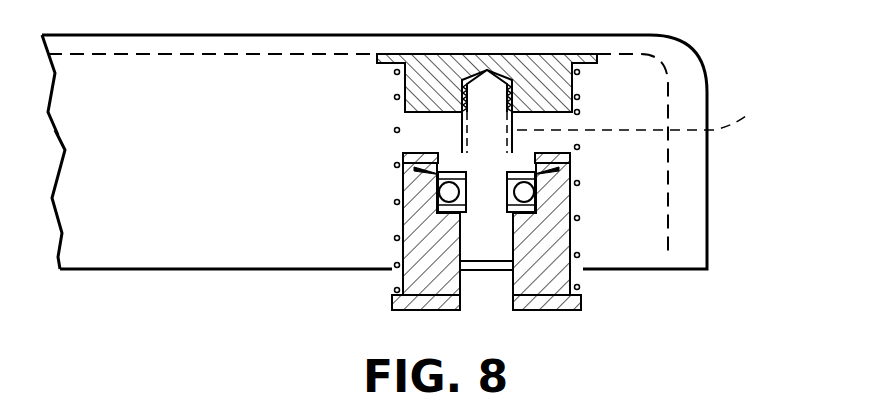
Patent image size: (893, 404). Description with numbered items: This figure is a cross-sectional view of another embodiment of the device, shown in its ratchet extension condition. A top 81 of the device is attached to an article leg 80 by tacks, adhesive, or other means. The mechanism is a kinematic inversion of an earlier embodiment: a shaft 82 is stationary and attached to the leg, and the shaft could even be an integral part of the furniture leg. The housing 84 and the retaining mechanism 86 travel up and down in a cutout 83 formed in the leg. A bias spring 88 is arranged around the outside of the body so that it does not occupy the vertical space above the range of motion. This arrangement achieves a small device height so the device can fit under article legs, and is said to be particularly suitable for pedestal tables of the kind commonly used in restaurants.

The article leg 80 is at (703, 68).
The top 81 is at (432, 48).
The shaft 82 is at (501, 249).
The cutout 83 is at (627, 123).
The housing 84 is at (543, 247).
The retaining mechanism 86 is at (443, 216).
The bias spring 88 is at (578, 183).